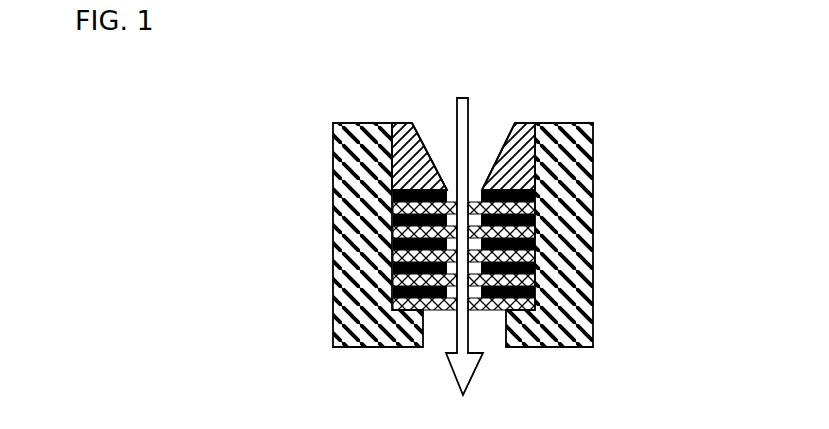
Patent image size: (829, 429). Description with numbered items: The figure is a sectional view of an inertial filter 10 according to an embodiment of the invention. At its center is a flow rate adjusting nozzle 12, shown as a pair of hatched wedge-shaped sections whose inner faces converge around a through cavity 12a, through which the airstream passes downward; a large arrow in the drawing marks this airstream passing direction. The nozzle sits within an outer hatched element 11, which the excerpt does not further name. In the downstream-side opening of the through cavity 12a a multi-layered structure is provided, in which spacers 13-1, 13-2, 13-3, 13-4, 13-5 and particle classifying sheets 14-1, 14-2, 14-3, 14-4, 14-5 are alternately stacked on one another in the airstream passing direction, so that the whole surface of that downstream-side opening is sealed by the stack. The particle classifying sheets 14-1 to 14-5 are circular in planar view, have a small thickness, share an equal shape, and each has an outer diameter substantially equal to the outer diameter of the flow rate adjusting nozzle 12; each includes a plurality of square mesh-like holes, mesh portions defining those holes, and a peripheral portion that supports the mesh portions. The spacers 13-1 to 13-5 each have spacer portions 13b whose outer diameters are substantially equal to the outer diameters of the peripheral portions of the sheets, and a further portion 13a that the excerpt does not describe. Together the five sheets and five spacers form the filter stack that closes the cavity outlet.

The piezoelectric actuator / pump device 10 is at (690, 77).
The housing 11 is at (360, 137).
The flow rate adjusting nozzle 12 is at (405, 123).
The through cavity 12a is at (494, 150).
The inclined surface of wedge 13a is at (453, 187).
The spacer portion 13b is at (393, 163).
The spacer 13-1 is at (530, 174).
The spacer 13-2 is at (535, 222).
The spacer 13-3 is at (535, 257).
The spacer 13-4 is at (535, 272).
The spacer 13-5 is at (535, 292).
The particle classifying sheet 14-1 is at (393, 213).
The particle classifying sheet 14-2 is at (393, 237).
The particle classifying sheet 14-3 is at (393, 275).
The particle classifying sheet 14-4 is at (393, 293).
The particle classifying sheet 14-5 is at (393, 345).